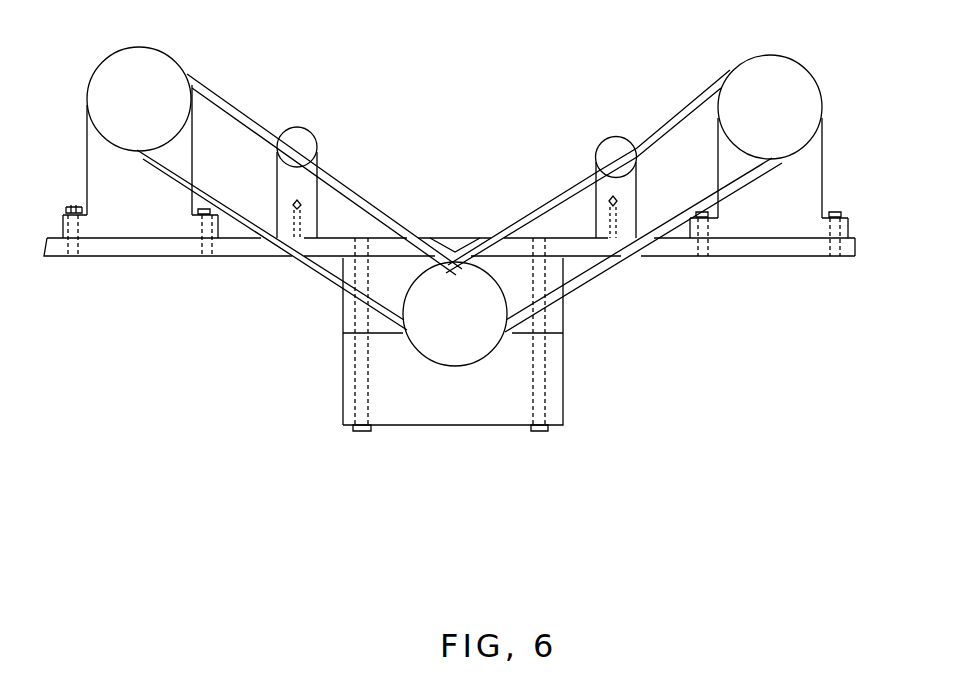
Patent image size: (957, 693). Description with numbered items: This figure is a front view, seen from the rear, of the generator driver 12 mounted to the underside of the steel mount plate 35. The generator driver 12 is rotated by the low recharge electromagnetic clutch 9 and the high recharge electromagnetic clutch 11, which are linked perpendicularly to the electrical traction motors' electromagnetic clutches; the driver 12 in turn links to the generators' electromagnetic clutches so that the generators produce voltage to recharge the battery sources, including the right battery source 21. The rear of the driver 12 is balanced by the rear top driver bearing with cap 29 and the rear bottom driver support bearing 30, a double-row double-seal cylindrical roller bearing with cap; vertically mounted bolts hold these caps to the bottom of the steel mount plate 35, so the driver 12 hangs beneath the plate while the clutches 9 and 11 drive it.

The low recharge electromagnetic clutch 9 is at (157, 63).
The high recharge electromagnetic clutch 11 is at (730, 72).
The right battery source 21 is at (300, 127).
The generator driver 12 is at (488, 357).
The steel mount plate 35 is at (223, 256).
The rear top driver bearing with cap 29 is at (563, 363).
The rear bottom driver support bearing 30 is at (343, 298).